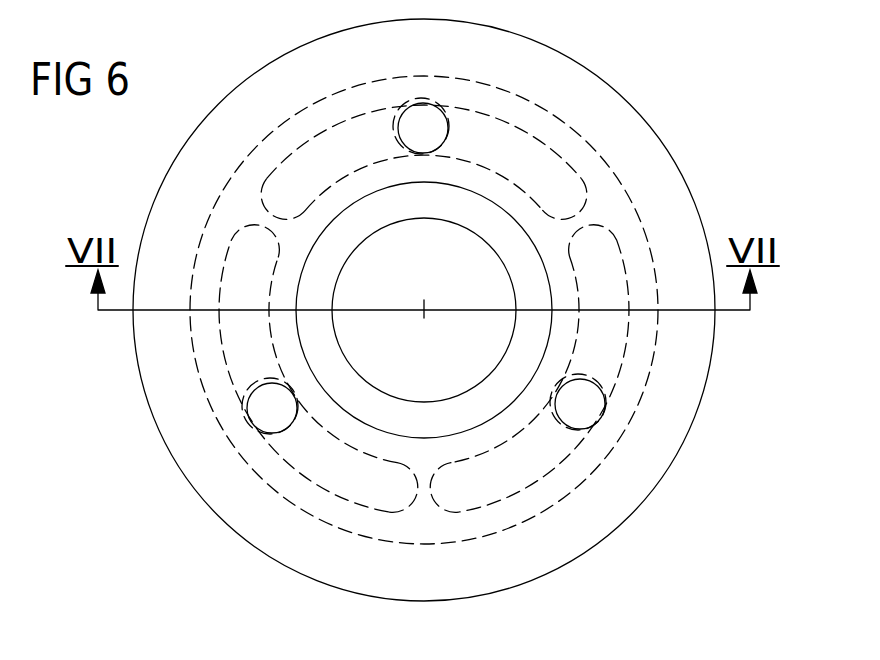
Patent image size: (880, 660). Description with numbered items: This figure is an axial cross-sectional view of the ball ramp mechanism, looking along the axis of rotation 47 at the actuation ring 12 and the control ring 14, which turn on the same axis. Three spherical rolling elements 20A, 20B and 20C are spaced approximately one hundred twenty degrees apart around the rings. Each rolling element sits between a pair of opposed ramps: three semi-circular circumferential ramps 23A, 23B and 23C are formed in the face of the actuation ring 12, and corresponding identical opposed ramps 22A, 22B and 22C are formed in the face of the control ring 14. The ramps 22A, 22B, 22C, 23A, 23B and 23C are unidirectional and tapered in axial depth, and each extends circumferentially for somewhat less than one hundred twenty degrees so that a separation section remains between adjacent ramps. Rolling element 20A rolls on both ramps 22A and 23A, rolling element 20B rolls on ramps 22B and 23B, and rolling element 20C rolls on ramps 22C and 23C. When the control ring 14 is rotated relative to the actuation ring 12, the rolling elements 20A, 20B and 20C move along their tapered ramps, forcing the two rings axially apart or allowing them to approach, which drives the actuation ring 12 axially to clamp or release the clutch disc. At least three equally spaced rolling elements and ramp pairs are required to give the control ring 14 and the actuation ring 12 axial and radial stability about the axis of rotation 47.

The actuation ring 12 is at (565, 78).
The control ring 14 is at (655, 267).
The spherical rolling element 20A is at (440, 112).
The spherical rolling element 20B is at (255, 410).
The spherical rolling element 20C is at (607, 400).
The ramp 22A is at (343, 130).
The ramp 22B is at (307, 473).
The ramp 22C is at (603, 242).
The ramp 23A is at (535, 160).
The ramp 23B is at (240, 333).
The ramp 23C is at (570, 452).
The axis of rotation 47 is at (424, 310).